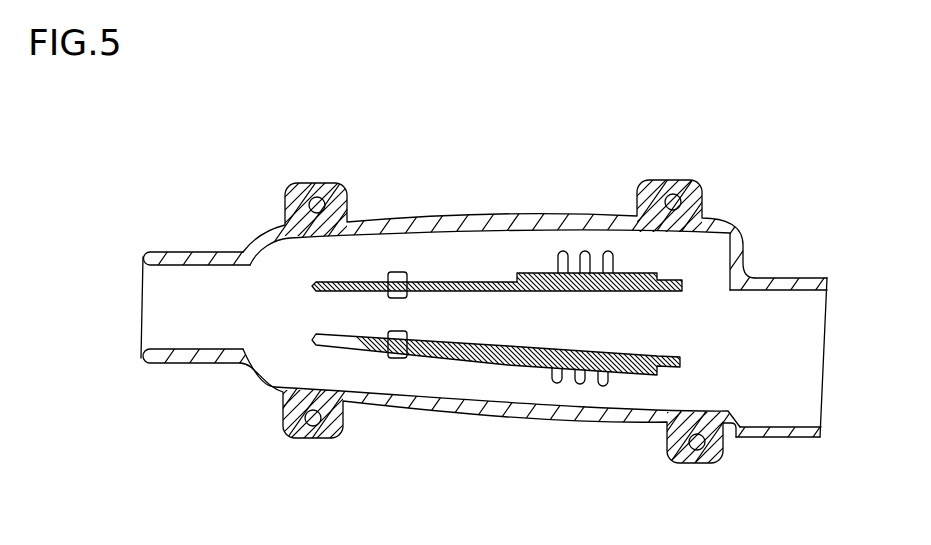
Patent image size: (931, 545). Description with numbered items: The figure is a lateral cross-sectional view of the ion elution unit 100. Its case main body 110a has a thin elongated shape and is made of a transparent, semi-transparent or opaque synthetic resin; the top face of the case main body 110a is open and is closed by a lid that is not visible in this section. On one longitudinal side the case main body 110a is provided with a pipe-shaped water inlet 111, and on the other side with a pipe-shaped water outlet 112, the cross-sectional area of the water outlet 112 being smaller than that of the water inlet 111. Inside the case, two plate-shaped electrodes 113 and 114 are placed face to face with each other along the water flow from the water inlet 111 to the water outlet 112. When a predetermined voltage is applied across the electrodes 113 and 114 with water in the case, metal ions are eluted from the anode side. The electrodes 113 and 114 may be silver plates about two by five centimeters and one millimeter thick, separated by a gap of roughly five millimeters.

The ion elution unit 100 is at (585, 170).
The case main body 110a is at (420, 217).
The water inlet 111 is at (795, 277).
The water outlet 112 is at (190, 251).
The electrode 113 is at (468, 350).
The electrode 114 is at (468, 281).